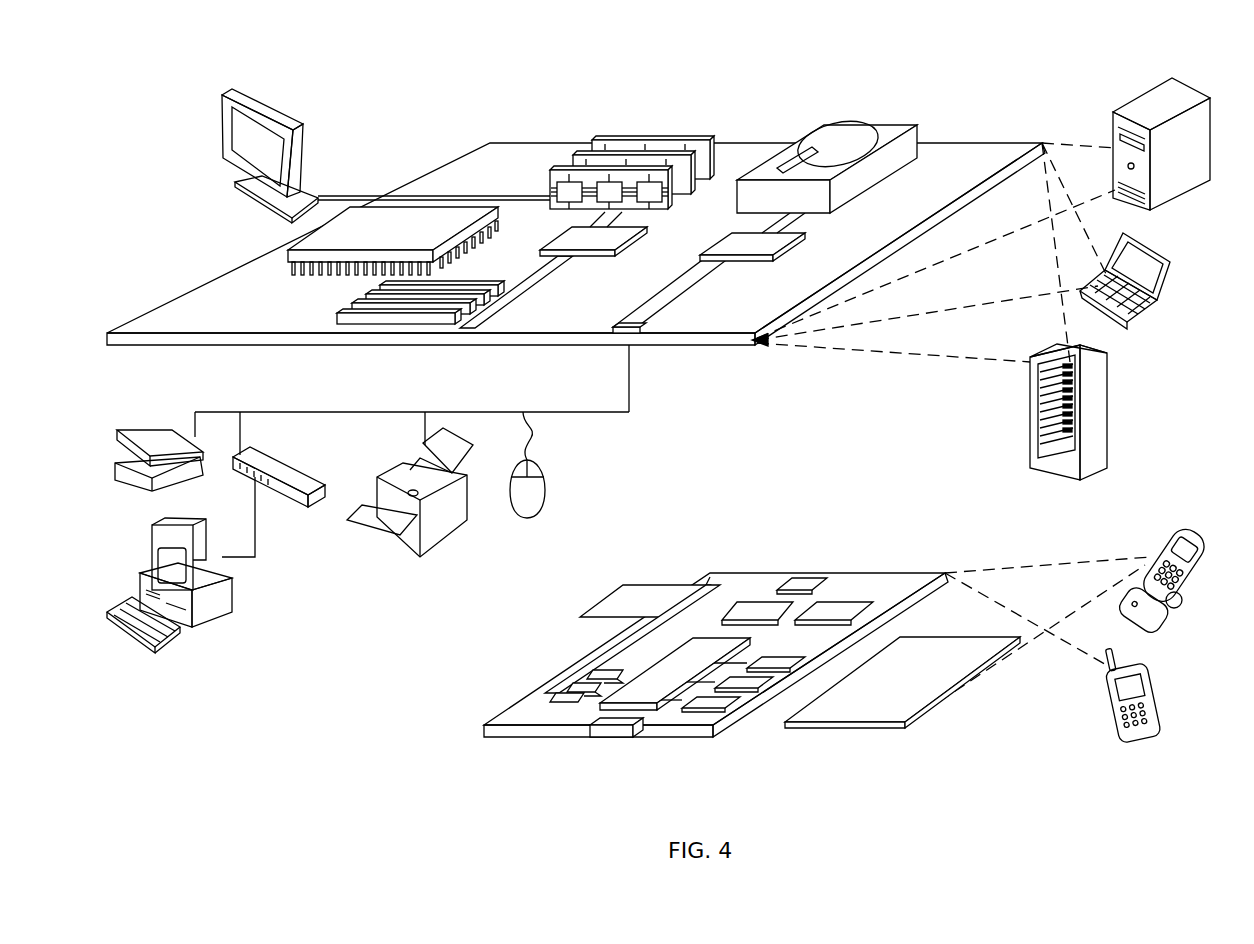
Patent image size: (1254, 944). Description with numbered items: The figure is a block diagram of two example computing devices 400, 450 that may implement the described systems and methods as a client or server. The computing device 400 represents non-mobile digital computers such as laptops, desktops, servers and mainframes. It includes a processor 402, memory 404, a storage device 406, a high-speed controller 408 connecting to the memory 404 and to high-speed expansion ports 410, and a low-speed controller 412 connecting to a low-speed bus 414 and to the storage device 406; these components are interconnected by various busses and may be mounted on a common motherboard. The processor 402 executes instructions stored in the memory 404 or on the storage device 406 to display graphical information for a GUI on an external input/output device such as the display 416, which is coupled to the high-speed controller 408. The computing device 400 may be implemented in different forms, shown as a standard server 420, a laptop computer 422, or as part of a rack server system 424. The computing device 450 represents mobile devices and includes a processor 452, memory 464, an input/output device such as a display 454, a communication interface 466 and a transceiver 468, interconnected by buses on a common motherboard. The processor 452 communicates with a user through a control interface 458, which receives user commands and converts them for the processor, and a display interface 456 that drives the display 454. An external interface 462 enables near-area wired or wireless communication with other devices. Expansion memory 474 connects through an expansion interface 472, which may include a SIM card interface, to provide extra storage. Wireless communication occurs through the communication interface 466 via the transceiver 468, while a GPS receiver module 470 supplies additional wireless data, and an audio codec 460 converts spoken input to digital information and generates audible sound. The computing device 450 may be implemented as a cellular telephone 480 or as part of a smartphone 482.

The computing device 400 is at (405, 110).
The processor 402 is at (288, 255).
The memory 404 is at (600, 140).
The storage device 406 is at (819, 125).
The high-speed controller 408 is at (568, 237).
The high-speed expansion ports 410 is at (355, 311).
The low-speed controller 412 is at (736, 239).
The low-speed bus 414 is at (636, 335).
The display 416 is at (224, 94).
The standard server 420 is at (1114, 129).
The laptop computer 422 is at (1173, 264).
The rack server system 424 is at (1030, 422).
The computing device 450 is at (458, 738).
The processor 452 is at (651, 700).
The display 454 is at (872, 711).
The display interface 456 is at (716, 708).
The control interface 458 is at (743, 686).
The audio codec 460 is at (770, 666).
The external interface 462 is at (622, 729).
The memory 464 is at (568, 692).
The communication interface 466 is at (766, 610).
The transceiver 468 is at (837, 606).
The GPS receiver module 470 is at (808, 587).
The expansion interface 472 is at (688, 590).
The expansion memory 474 is at (624, 590).
The cellular telephone 480 is at (1153, 534).
The smartphone 482 is at (1110, 704).